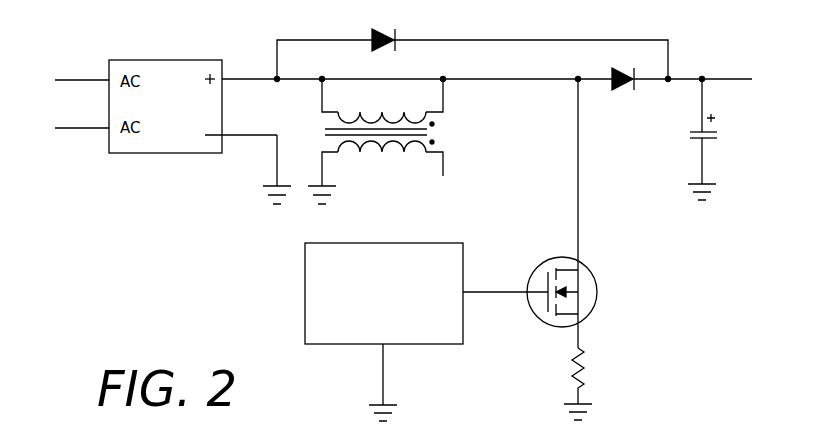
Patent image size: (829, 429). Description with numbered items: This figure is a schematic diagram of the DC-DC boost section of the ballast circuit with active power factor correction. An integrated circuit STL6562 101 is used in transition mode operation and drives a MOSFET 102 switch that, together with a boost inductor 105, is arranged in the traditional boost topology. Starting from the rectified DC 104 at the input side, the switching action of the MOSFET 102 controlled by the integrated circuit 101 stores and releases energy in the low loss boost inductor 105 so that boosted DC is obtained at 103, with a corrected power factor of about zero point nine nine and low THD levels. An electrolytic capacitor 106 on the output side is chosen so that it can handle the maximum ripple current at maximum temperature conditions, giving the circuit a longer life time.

The integrated circuit STL6562 101 is at (308, 262).
The MOSFET switch 102 is at (586, 266).
The boosted DC 103 is at (724, 78).
The rectified DC 104 is at (252, 78).
The boost inductor 105 is at (438, 127).
The electrolytic capacitor 106 is at (690, 136).